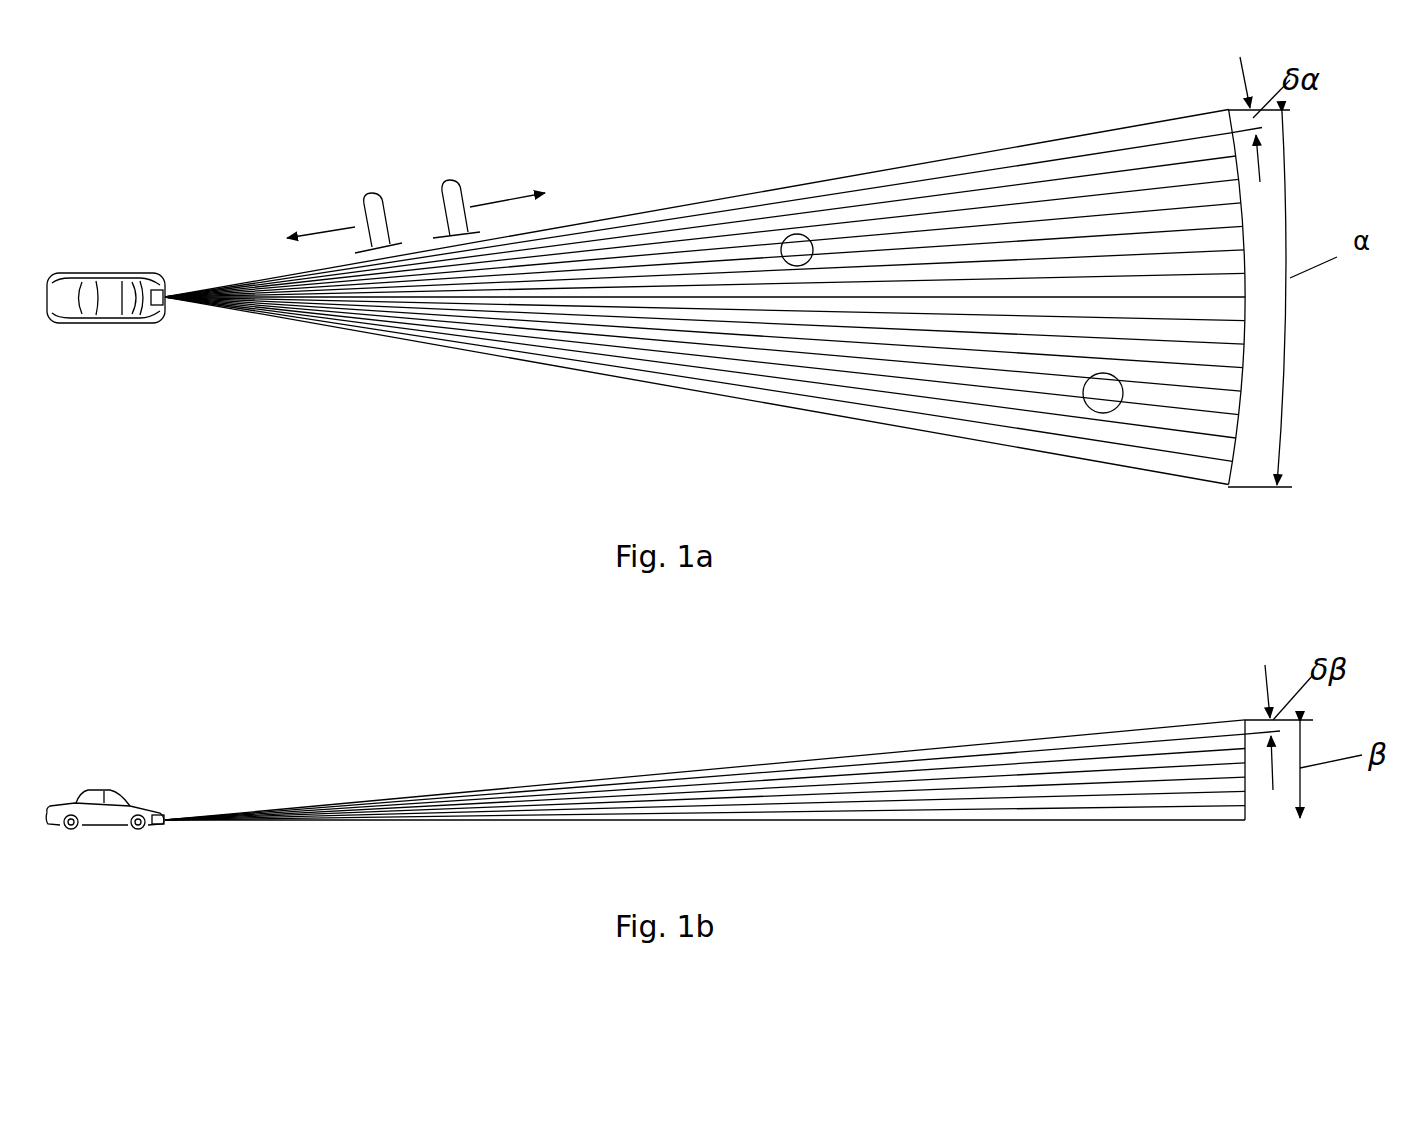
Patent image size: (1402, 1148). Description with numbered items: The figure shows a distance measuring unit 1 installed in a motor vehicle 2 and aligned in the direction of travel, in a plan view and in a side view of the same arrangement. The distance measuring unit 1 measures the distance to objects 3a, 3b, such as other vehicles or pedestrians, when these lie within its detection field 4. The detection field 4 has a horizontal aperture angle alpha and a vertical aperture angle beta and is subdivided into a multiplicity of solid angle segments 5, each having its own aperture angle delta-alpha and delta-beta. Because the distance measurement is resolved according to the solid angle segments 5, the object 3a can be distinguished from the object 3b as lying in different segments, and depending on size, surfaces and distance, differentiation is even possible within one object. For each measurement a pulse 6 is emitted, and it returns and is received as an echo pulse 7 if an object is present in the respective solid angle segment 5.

In FIG. 1A, the distance measuring unit 1 is at (160, 288).
In FIG. 1B, the distance measuring unit 1 is at (160, 812).
In FIG. 1A, the motor vehicle 2 is at (55, 262).
In FIG. 1B, the motor vehicle 2 is at (72, 790).
In FIG. 1A, the object 3a is at (795, 250).
In FIG. 1A, the object 3b is at (1103, 393).
In FIG. 1B, the detection field 4 is at (629, 768).
In FIG. 1A, the solid angle segments 5 is at (1060, 190).
In FIG. 1B, the solid angle segments 5 is at (1007, 792).
In FIG. 1A, the pulse 6 is at (451, 195).
In FIG. 1A, the echo pulse 7 is at (372, 207).